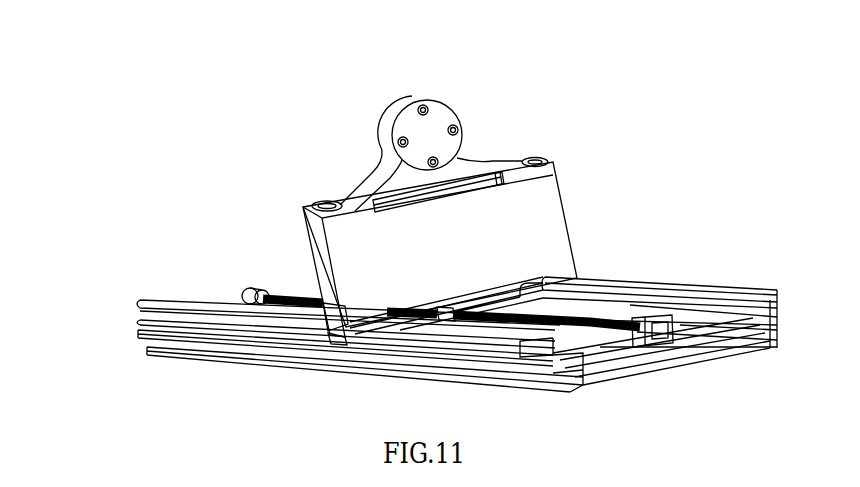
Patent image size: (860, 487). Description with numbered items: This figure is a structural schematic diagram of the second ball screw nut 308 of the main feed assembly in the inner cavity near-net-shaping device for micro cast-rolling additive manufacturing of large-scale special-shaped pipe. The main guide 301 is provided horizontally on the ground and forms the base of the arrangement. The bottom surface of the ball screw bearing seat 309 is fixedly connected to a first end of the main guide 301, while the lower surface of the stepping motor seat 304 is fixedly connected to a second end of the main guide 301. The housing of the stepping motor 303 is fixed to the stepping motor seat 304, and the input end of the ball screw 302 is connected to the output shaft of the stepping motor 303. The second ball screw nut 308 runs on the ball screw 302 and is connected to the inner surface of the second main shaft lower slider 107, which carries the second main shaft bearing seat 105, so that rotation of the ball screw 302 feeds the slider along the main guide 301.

The second main shaft bearing seat 105 is at (385, 132).
The second main shaft lower slider 107 is at (427, 278).
The main guide 301 is at (158, 343).
The ball screw 302 is at (303, 310).
The stepping motor 303 is at (668, 338).
The stepping motor seat 304 is at (665, 335).
The second ball screw nut 308 is at (488, 292).
The ball screw bearing seat 309 is at (248, 293).